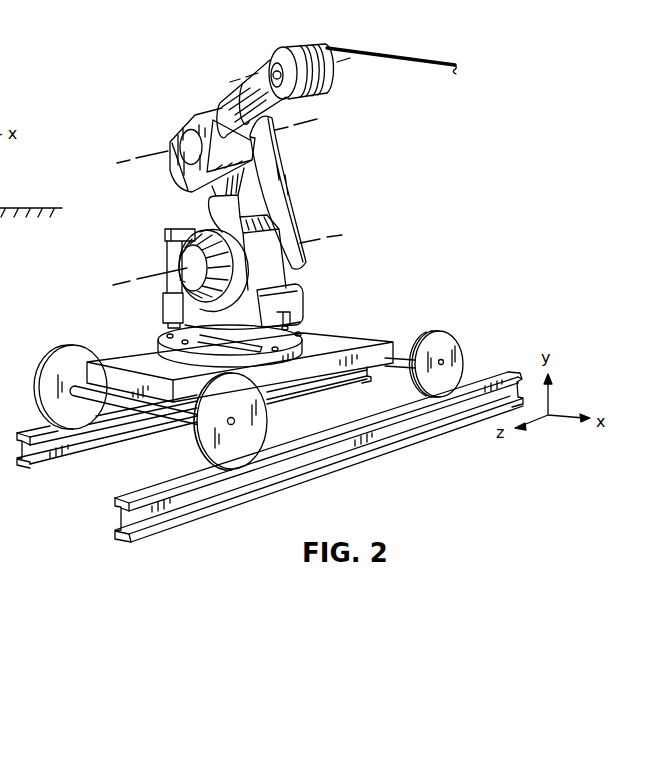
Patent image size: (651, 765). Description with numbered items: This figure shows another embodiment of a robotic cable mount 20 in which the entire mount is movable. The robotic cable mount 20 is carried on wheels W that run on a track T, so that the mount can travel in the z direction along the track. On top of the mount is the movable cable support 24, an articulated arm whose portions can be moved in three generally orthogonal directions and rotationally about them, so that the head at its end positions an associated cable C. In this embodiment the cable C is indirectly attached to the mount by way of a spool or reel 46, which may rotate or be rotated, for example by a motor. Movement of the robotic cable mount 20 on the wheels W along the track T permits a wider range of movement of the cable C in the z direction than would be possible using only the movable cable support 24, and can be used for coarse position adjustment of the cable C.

The robotic cable mount 20 is at (200, 76).
The movable cable support 24 is at (312, 217).
The spool or reel 46 is at (283, 46).
The cable C is at (431, 61).
The wheels W is at (457, 338).
The track T is at (506, 373).